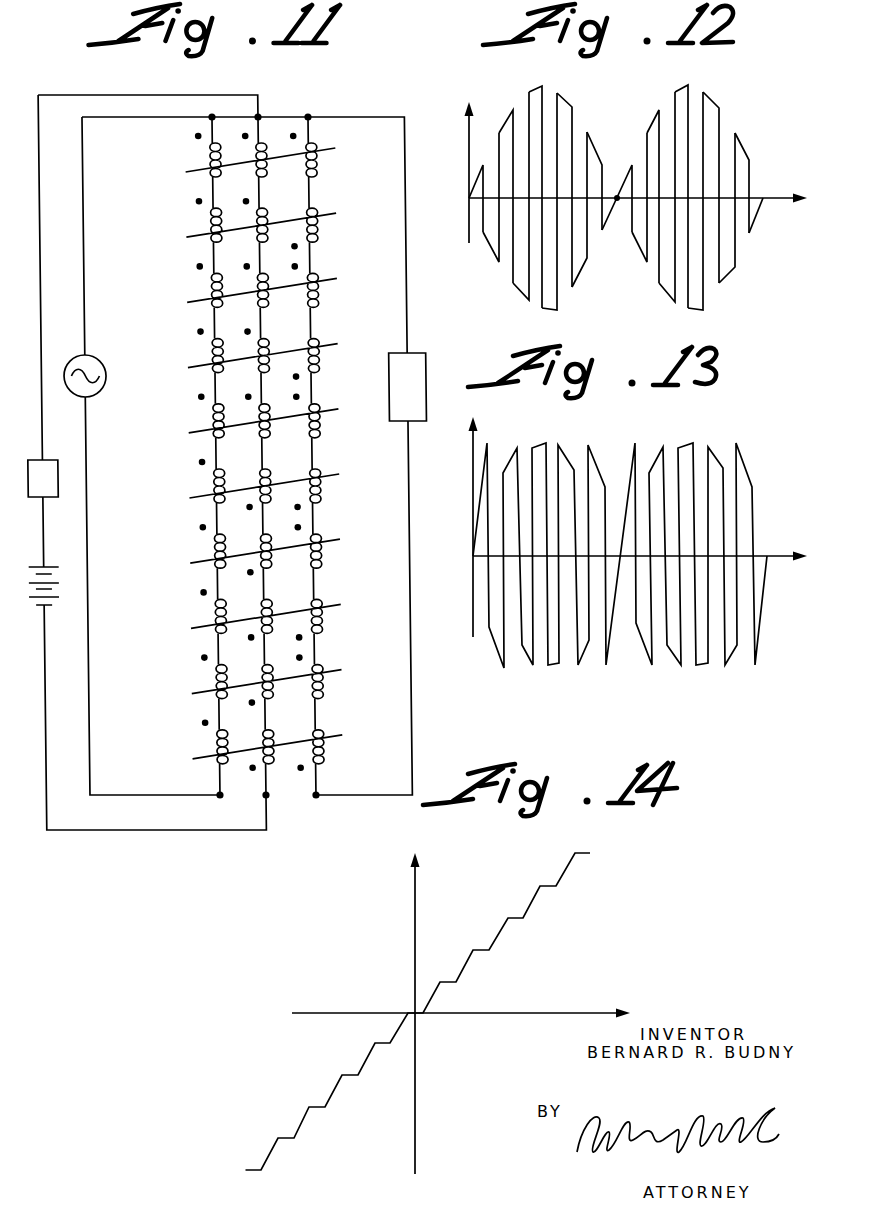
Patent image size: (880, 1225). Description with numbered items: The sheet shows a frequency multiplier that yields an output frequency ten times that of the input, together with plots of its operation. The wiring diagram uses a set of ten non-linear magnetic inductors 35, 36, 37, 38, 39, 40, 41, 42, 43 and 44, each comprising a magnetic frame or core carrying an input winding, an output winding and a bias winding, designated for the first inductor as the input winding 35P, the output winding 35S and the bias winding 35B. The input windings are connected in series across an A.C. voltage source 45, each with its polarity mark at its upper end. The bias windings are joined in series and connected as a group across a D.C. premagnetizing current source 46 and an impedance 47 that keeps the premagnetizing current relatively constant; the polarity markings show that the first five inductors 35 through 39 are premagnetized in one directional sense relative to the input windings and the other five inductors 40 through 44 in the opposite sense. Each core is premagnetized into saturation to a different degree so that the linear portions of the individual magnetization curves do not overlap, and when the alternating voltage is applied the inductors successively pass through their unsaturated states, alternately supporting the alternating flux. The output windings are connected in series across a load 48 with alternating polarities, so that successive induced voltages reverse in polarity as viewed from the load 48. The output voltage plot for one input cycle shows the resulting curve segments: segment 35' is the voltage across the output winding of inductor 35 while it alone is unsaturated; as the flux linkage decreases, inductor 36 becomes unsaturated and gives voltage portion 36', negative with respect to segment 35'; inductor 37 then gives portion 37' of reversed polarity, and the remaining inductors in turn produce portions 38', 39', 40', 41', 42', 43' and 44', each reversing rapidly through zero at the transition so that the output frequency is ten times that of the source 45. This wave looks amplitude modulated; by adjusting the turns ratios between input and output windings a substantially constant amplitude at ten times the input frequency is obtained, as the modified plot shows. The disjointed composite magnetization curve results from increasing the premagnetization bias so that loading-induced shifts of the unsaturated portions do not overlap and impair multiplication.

In FIG. 11, the non-linear magnetic inductor 35 is at (221, 152).
In FIG. 11, the input winding 35P is at (205, 150).
In FIG. 11, the bias winding 35B is at (258, 142).
In FIG. 11, the output winding 35S is at (314, 167).
In FIG. 11, the non-linear magnetic inductor 36 is at (220, 224).
In FIG. 11, the non-linear magnetic inductor 37 is at (218, 285).
In FIG. 11, the non-linear magnetic inductor 38 is at (221, 354).
In FIG. 11, the non-linear magnetic inductor 39 is at (229, 416).
In FIG. 11, the non-linear magnetic inductor 40 is at (232, 485).
In FIG. 11, the non-linear magnetic inductor 41 is at (227, 550).
In FIG. 11, the non-linear magnetic inductor 42 is at (229, 615).
In FIG. 11, the non-linear magnetic inductor 43 is at (229, 680).
In FIG. 11, the non-linear magnetic inductor 44 is at (229, 746).
In FIG. 11, the A.C. voltage source 45 is at (80, 355).
In FIG. 11, the D.C. premagnetizing current source 46 is at (33, 608).
In FIG. 11, the impedance 47 is at (46, 488).
In FIG. 11, the load 48 is at (412, 394).
In FIG. 12, the voltage curve segment 35' is at (611, 199).
In FIG. 12, the voltage curve segment 36' is at (606, 201).
In FIG. 12, the voltage curve segment 37' is at (625, 199).
In FIG. 12, the voltage curve segment 38' is at (618, 204).
In FIG. 12, the voltage curve segment 39' is at (628, 194).
In FIG. 12, the voltage curve segment 40' is at (619, 194).
In FIG. 12, the voltage curve segment 41' is at (616, 207).
In FIG. 12, the voltage curve segment 42' is at (615, 194).
In FIG. 12, the voltage curve segment 43' is at (617, 196).
In FIG. 12, the voltage curve segment 44' is at (617, 208).